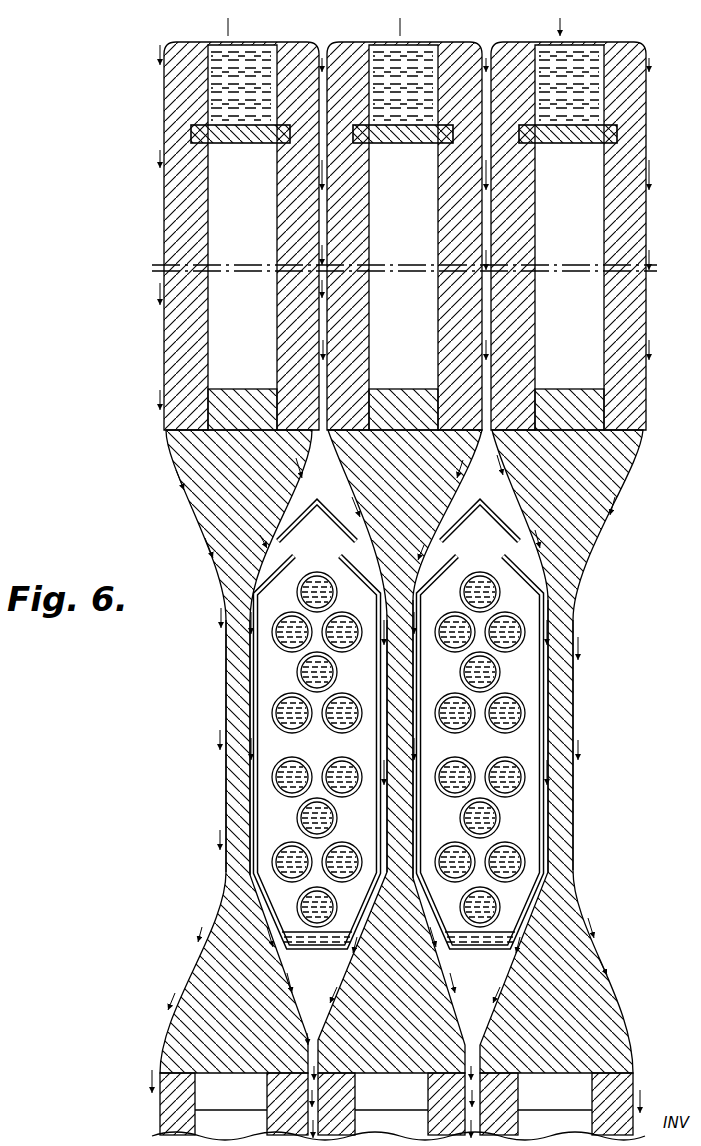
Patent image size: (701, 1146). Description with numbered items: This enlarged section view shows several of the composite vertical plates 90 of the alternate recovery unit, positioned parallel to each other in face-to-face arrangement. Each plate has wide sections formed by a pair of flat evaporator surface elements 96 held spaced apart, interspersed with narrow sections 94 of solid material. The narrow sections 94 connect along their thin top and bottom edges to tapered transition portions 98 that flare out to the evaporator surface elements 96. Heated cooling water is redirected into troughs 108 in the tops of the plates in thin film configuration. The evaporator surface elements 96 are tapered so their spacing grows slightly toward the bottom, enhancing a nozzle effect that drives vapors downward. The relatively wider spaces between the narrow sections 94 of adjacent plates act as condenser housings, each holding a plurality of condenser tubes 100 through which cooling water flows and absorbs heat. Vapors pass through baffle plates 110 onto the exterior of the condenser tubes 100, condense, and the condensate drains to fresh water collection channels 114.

The vertical plates 90 is at (381, 23).
The narrow sections 94 is at (226, 671).
The evaporator surface elements 96 is at (288, 336).
The tapered transition portions 98 is at (231, 394).
The condenser tubes 100 is at (343, 757).
The troughs 108 is at (250, 48).
The baffle plates 110 is at (342, 556).
The fresh water collection channels 114 is at (306, 949).